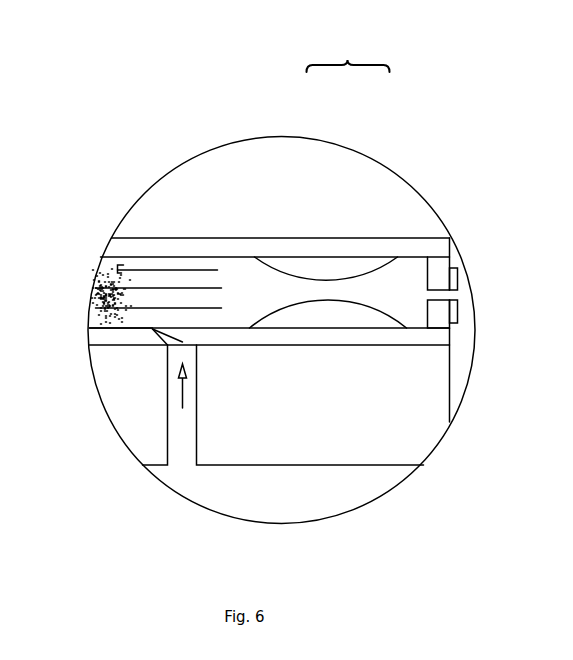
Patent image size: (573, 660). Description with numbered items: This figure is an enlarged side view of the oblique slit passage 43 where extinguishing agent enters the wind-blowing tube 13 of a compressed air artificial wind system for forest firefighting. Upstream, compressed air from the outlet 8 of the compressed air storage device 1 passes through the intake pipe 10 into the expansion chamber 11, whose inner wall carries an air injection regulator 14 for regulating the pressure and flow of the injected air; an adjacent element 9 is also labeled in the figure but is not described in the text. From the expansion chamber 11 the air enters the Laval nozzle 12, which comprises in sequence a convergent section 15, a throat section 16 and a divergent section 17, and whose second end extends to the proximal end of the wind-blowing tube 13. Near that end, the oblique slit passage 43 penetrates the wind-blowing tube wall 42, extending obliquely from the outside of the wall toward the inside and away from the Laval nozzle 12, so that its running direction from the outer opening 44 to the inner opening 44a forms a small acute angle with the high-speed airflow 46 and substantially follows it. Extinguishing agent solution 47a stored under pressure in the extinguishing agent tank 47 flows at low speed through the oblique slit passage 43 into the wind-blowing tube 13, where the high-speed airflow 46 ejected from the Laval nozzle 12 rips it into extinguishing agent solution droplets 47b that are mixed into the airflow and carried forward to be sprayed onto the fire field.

The compressed air storage device 1 is at (468, 325).
The outlet 8 is at (460, 298).
The lower holding member 9 is at (452, 318).
The intake pipe 10 is at (437, 297).
The expansion chamber 11 is at (416, 285).
The Laval nozzle 12 is at (348, 55).
The wind-blowing tube 13 is at (241, 294).
The air injection regulator 14 is at (435, 320).
The convergent section 15 is at (376, 288).
The throat section 16 is at (327, 287).
The divergent section 17 is at (277, 292).
The wind-blowing tube wall 42 is at (215, 338).
The oblique slit passage 43 is at (160, 333).
The outer opening 44 is at (188, 343).
The inner opening 44a is at (138, 328).
The high-speed airflow 46 is at (119, 268).
The extinguishing agent tank 47 is at (357, 473).
The extinguishing agent solution 47a is at (175, 390).
The extinguishing agent solution droplets 47b is at (98, 297).